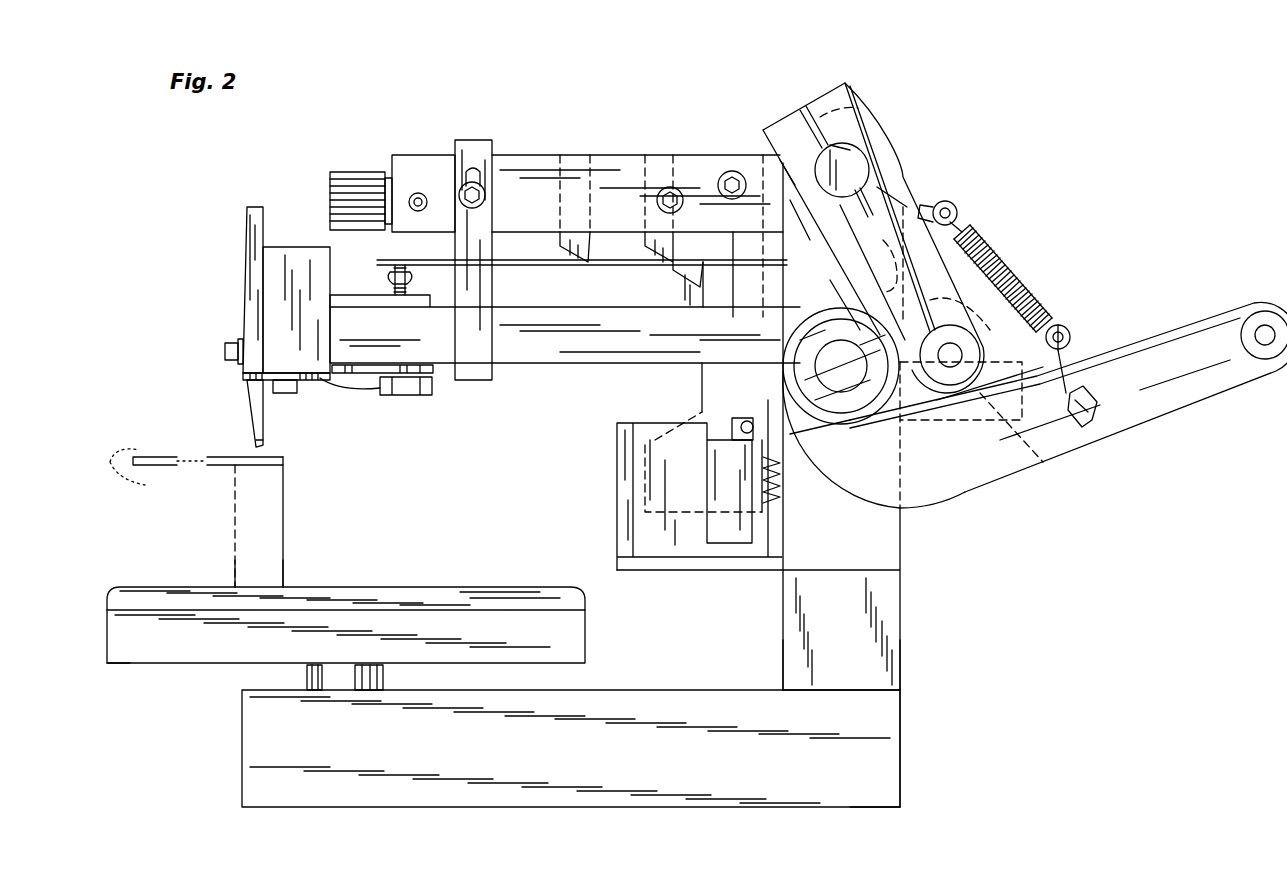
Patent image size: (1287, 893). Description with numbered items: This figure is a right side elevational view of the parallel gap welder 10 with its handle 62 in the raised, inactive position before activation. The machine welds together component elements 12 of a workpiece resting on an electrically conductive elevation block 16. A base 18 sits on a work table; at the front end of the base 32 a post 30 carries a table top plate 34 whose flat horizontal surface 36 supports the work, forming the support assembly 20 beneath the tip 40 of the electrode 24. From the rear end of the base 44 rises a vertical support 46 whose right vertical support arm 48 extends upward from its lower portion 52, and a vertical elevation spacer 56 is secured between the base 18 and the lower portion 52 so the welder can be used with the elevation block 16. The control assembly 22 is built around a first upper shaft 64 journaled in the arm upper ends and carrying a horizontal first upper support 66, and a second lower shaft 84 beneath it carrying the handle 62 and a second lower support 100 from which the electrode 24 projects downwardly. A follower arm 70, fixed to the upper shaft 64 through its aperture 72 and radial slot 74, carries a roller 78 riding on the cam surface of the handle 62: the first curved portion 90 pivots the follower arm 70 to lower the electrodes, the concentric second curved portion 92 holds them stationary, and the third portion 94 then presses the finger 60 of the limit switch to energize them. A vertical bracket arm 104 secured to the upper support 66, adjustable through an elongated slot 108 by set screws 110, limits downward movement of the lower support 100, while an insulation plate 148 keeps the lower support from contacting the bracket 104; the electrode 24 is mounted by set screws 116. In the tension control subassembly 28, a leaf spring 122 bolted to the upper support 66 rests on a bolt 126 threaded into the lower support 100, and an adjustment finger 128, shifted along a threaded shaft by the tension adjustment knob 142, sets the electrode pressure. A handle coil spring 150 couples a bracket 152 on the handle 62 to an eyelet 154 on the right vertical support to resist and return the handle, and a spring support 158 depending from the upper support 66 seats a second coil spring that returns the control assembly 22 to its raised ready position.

The parallel gap welder 10 is at (1011, 70).
The component elements 12 is at (133, 462).
The electrically conductive elevation block 16 is at (235, 487).
The base 18 is at (885, 808).
The support assembly 20 is at (250, 590).
The control assembly 22 is at (1048, 265).
The electrode 24 is at (248, 410).
The tension control subassembly 28 is at (430, 110).
The post 30 is at (302, 677).
The front end of the base 32 is at (240, 758).
The table top plate 34 is at (143, 650).
The flat horizontal surface 36 is at (190, 590).
The tip 40 is at (255, 450).
The rear end of the base 44 is at (898, 735).
The vertical support 46 is at (945, 540).
The right vertical support arm 48 is at (860, 140).
The lower support portion 52 is at (893, 557).
The vertical elevation spacer 56 is at (898, 662).
The finger 60 is at (740, 420).
The handle 62 is at (1165, 412).
The first upper shaft 64 is at (852, 158).
The first upper support 66 is at (632, 155).
The follower arm 70 is at (910, 190).
The aperture 72 is at (846, 144).
The radial slot 74 is at (816, 100).
The roller 78 is at (971, 380).
The second lower shaft 84 is at (850, 345).
The first curved portion 90 is at (955, 300).
The second curved portion 92 is at (877, 265).
The third portion 94 is at (880, 505).
The second lower support 100 is at (565, 368).
The vertical bracket arm 104 is at (486, 145).
The elongated slot 108 is at (480, 170).
The set screw 110 is at (486, 190).
The set screw 116 is at (222, 345).
The leaf spring 122 is at (380, 260).
The bolt 126 is at (392, 272).
The adjustment finger 128 is at (588, 155).
The tension adjustment knob 142 is at (345, 172).
The insulation plate 148 is at (480, 385).
The handle coil spring 150 is at (1045, 300).
The bracket 152 is at (782, 508).
The spring eye 154 is at (953, 206).
The spring support 158 is at (663, 578).